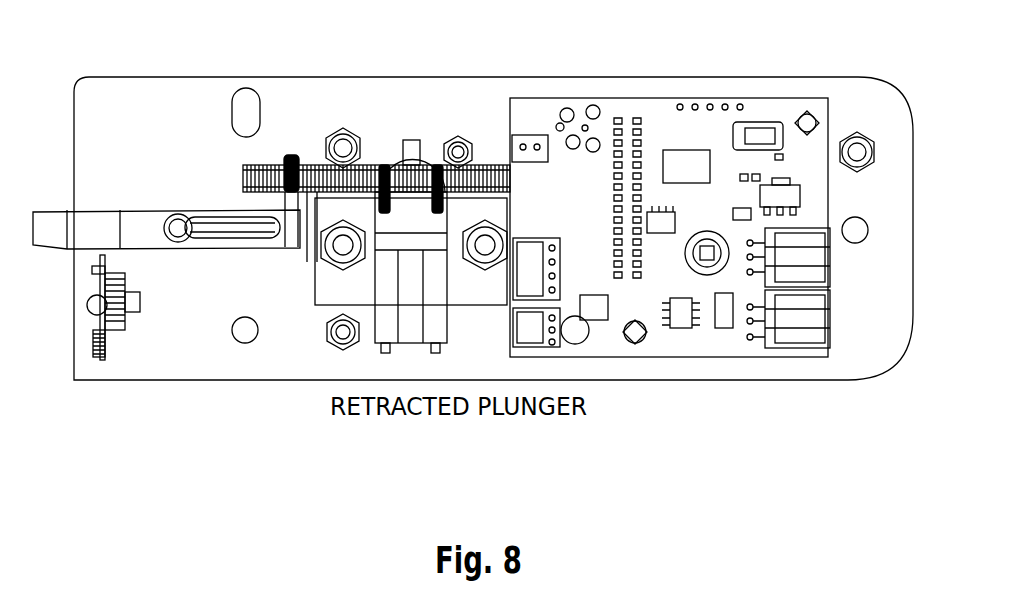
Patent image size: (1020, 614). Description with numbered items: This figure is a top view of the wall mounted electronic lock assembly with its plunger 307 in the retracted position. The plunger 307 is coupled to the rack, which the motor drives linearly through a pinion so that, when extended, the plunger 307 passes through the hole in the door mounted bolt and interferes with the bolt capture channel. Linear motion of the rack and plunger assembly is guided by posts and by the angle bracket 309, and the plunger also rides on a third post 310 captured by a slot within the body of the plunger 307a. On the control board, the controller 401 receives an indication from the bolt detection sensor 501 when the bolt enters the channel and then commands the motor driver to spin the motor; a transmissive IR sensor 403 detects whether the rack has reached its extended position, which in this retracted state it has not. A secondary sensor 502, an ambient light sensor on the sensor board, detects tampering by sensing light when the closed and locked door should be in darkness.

The plunger 307 is at (92, 223).
The slot within the body of the plunger 307a is at (218, 213).
The third post 310 is at (168, 216).
The angle bracket 309 is at (328, 212).
The sensor 403 is at (527, 142).
The controller 401 is at (685, 158).
The bolt detection sensor 501 is at (95, 272).
The secondary sensor 502 is at (86, 340).